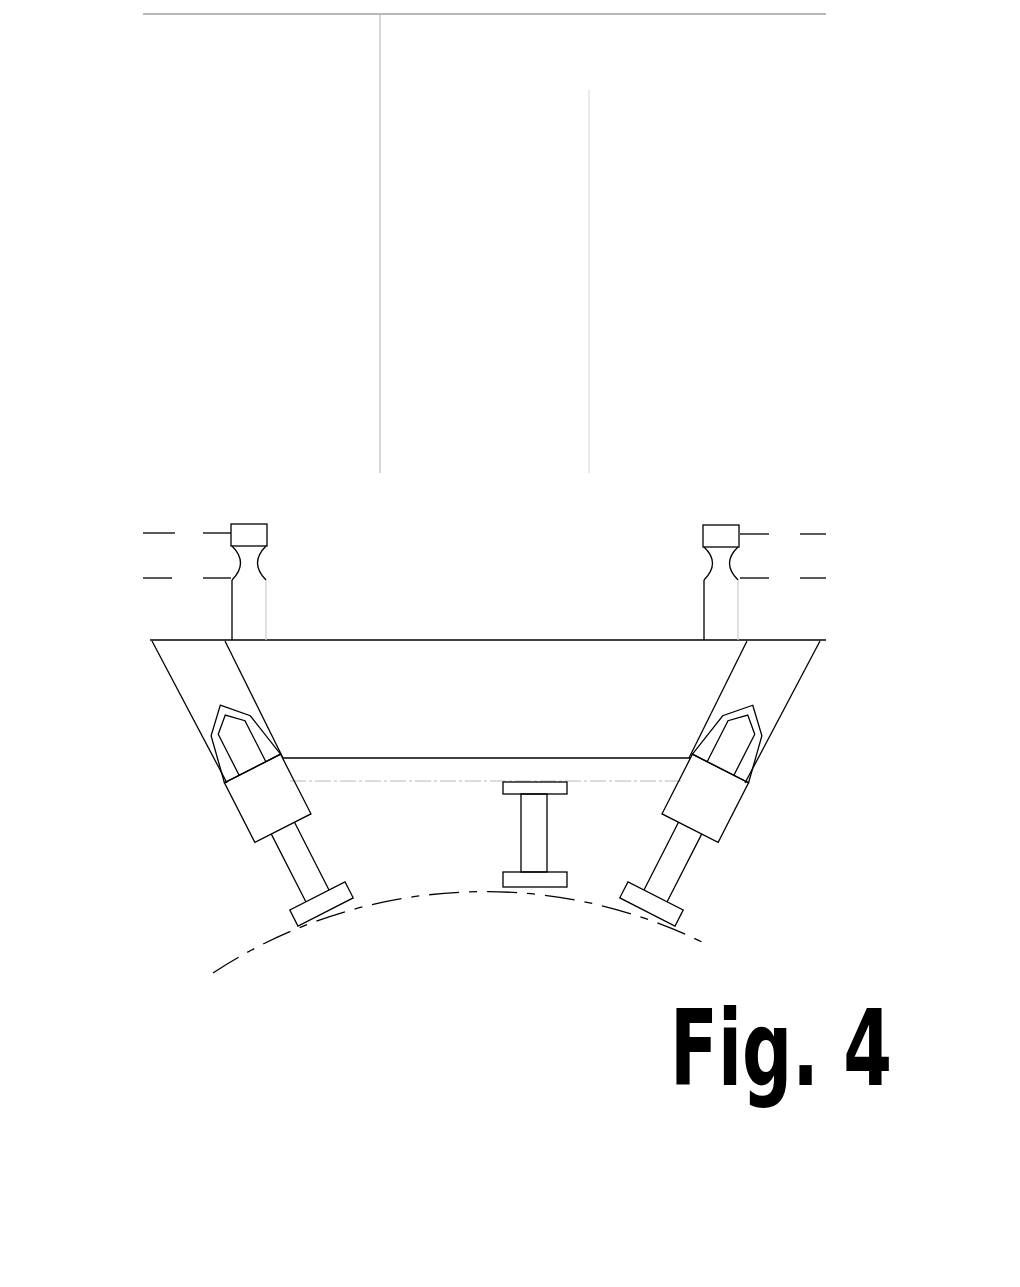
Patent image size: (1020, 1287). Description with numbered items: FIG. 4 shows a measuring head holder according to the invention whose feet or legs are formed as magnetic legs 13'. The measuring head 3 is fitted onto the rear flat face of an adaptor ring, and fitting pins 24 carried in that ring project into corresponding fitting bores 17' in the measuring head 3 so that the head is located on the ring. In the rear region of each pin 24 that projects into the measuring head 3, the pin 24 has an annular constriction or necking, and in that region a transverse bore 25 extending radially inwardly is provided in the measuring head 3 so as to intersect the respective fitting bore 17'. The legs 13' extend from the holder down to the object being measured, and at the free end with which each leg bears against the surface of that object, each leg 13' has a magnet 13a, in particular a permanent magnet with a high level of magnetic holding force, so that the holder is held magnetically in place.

The measuring head 3 is at (142, 203).
The transverse bore 25 is at (183, 550).
The fitting bore 17' is at (485, 536).
The fitting pin 24 is at (255, 613).
The magnetic leg 13' is at (527, 800).
The magnet 13a is at (637, 903).